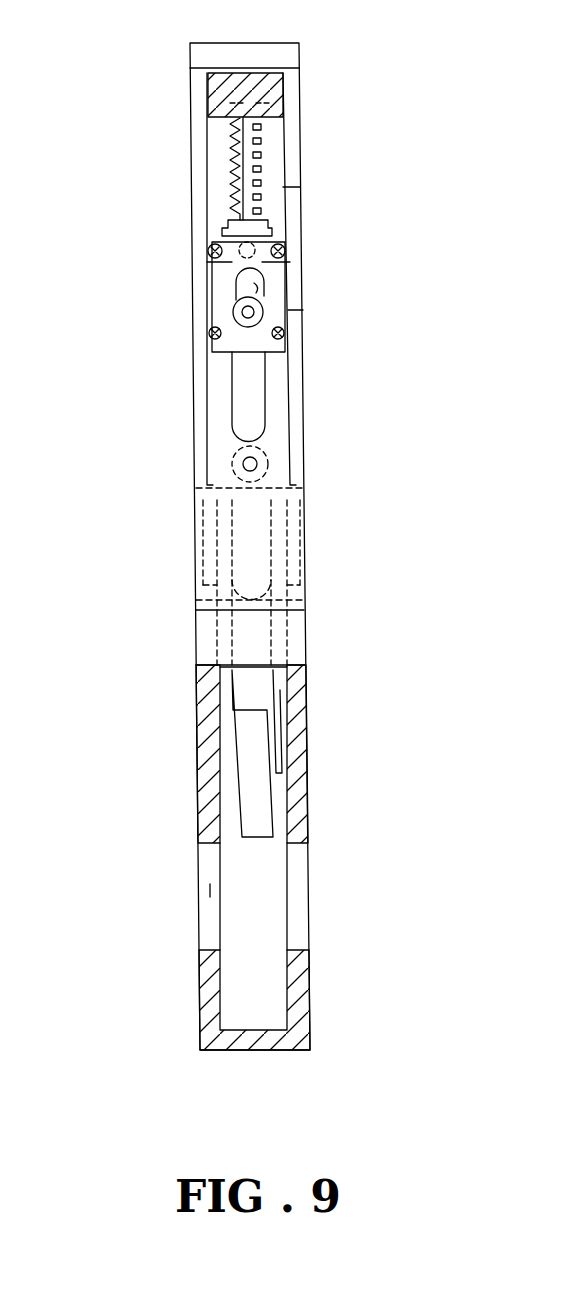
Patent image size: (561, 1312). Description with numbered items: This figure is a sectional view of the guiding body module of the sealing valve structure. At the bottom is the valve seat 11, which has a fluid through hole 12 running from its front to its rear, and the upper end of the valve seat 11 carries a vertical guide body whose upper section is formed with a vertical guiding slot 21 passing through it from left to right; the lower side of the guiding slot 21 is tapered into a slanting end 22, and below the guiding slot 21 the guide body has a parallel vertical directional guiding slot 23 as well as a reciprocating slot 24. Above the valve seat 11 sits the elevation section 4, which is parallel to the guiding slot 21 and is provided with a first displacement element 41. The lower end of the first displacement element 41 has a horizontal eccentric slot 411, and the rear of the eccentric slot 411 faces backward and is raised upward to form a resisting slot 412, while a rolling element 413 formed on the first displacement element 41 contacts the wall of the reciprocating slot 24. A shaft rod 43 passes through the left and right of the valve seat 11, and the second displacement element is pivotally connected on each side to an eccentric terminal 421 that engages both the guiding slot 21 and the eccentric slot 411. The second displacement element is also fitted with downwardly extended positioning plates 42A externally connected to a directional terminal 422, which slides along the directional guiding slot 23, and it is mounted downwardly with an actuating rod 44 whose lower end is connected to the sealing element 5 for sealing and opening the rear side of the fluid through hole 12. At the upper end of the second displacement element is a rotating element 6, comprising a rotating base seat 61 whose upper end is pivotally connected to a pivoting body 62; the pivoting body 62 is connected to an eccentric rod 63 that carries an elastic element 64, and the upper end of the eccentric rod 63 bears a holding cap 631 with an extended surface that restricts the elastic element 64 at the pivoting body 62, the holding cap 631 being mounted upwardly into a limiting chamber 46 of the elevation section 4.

The elevation section 4 is at (218, 93).
The limiting chamber 46 is at (284, 107).
The holding cap 631 is at (268, 107).
The rotating element 6 is at (174, 227).
The elastic element 64 is at (232, 176).
The eccentric rod 63 is at (230, 184).
The pivoting body 62 is at (230, 232).
The rotating base seat 61 is at (194, 297).
The reciprocating slot 24 is at (214, 410).
The first displacement element 41 is at (284, 187).
The eccentric terminal 421 is at (238, 290).
The shaft rod 43 is at (247, 312).
The resisting slot 412 is at (260, 290).
The eccentric slot 411 is at (290, 310).
The rolling element 413 is at (288, 335).
The guiding slot 21 is at (233, 378).
The slanting end 22 is at (268, 425).
The directional terminal 422 is at (268, 462).
The positioning plate 42A is at (288, 500).
The directional guiding slot 23 is at (280, 518).
The actuating rod 44 is at (277, 690).
The valve seat 11 is at (204, 776).
The fluid through hole 12 is at (210, 890).
The sealing element 5 is at (256, 840).